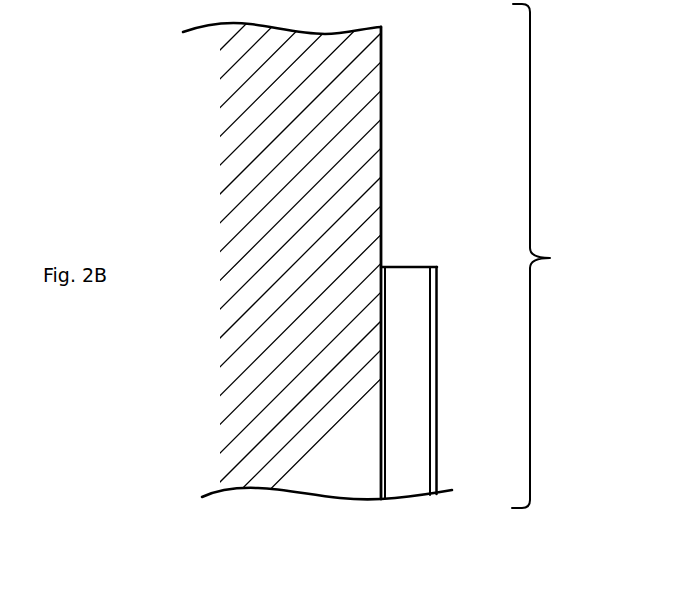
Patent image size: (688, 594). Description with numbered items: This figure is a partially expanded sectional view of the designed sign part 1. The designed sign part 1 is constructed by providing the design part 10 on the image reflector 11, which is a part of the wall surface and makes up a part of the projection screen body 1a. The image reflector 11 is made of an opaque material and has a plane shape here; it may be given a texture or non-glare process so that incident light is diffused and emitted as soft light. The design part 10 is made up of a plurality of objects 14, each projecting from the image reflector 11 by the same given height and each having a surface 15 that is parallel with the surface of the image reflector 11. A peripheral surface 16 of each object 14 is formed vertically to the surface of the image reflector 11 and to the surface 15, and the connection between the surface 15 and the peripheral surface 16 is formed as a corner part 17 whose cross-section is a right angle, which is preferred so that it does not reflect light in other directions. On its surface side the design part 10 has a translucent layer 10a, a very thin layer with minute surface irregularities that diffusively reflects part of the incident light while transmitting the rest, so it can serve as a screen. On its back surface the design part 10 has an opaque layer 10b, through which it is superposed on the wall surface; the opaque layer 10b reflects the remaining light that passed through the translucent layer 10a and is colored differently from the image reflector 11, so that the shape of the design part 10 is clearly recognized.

The designed sign part 1 is at (569, 59).
The projection screen body 1a is at (549, 256).
The image reflector 11 is at (382, 105).
The design part 10 is at (412, 352).
The translucent layer 10a is at (433, 390).
The opaque layer 10b is at (381, 443).
The object 14 is at (448, 314).
The surface 15 is at (438, 277).
The peripheral surface 16 is at (412, 267).
The corner part 17 is at (437, 267).